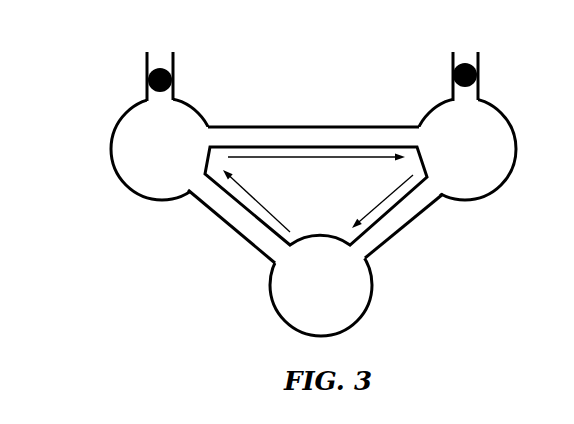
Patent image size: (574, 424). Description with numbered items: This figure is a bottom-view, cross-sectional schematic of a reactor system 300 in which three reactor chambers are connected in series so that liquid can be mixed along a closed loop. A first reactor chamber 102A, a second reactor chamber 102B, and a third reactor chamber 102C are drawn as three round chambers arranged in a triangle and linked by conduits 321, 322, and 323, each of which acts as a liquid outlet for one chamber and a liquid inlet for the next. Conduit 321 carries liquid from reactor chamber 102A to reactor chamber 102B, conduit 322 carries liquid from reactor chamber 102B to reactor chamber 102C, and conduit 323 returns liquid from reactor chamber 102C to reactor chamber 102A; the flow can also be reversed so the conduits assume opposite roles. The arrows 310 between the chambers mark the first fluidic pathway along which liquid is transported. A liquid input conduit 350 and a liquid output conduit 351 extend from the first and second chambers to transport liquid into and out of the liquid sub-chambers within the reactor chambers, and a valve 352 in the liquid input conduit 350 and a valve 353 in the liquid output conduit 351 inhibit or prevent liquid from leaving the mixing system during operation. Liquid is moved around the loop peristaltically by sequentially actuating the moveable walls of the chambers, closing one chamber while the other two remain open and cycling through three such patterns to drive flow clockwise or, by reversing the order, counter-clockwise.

The reactor system 300 is at (50, 87).
The first reactor chamber 102A is at (177, 126).
The second reactor chamber 102B is at (449, 126).
The third reactor chamber 102C is at (299, 297).
The first fluidic pathway 310 is at (318, 193).
The conduit 321 is at (352, 124).
The conduit 322 is at (408, 221).
The conduit 323 is at (221, 219).
The liquid input conduit 350 is at (175, 60).
The liquid output conduit 351 is at (452, 62).
The valve 352 is at (176, 85).
The valve 353 is at (452, 83).